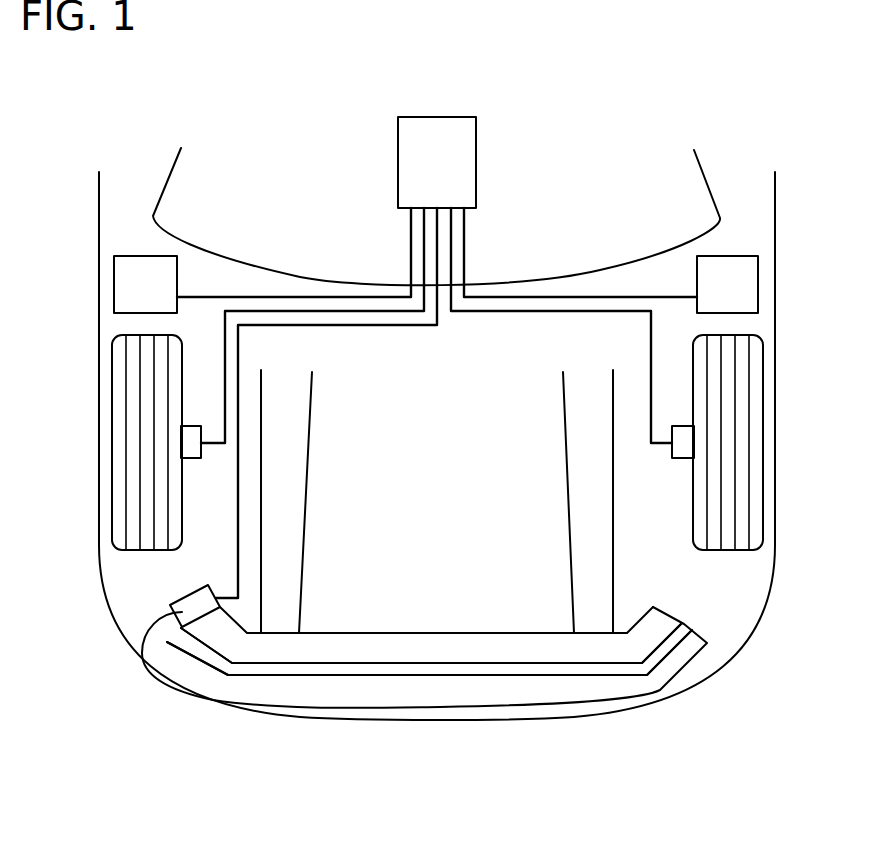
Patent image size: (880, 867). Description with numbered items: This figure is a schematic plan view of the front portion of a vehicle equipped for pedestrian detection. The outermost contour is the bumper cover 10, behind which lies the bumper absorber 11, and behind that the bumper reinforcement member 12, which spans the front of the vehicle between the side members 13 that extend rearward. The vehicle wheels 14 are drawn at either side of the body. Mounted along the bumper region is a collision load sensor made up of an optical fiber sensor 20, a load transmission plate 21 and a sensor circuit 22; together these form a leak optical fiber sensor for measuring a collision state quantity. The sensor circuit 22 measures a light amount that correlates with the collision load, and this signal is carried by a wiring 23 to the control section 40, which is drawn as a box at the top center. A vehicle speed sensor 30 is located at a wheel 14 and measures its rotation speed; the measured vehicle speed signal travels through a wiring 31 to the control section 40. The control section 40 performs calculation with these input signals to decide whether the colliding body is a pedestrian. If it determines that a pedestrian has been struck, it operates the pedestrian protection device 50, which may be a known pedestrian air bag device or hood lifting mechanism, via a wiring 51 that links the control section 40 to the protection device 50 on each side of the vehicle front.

The bumper cover 10 is at (533, 718).
The bumper absorber 11 is at (597, 685).
The bumper reinforcement member 12 is at (488, 648).
The side members 13 is at (586, 524).
The vehicle wheels 14 is at (118, 495).
The optical fiber sensor 20 is at (265, 670).
The load transmission plate 21 is at (345, 677).
The sensor circuit 22 is at (142, 655).
The wiring 23 is at (237, 548).
The vehicle speed sensor 30 is at (188, 438).
The wiring 31 is at (223, 332).
The control section 40 is at (446, 117).
The pedestrian protection device 50 is at (114, 278).
The wiring 51 is at (227, 297).